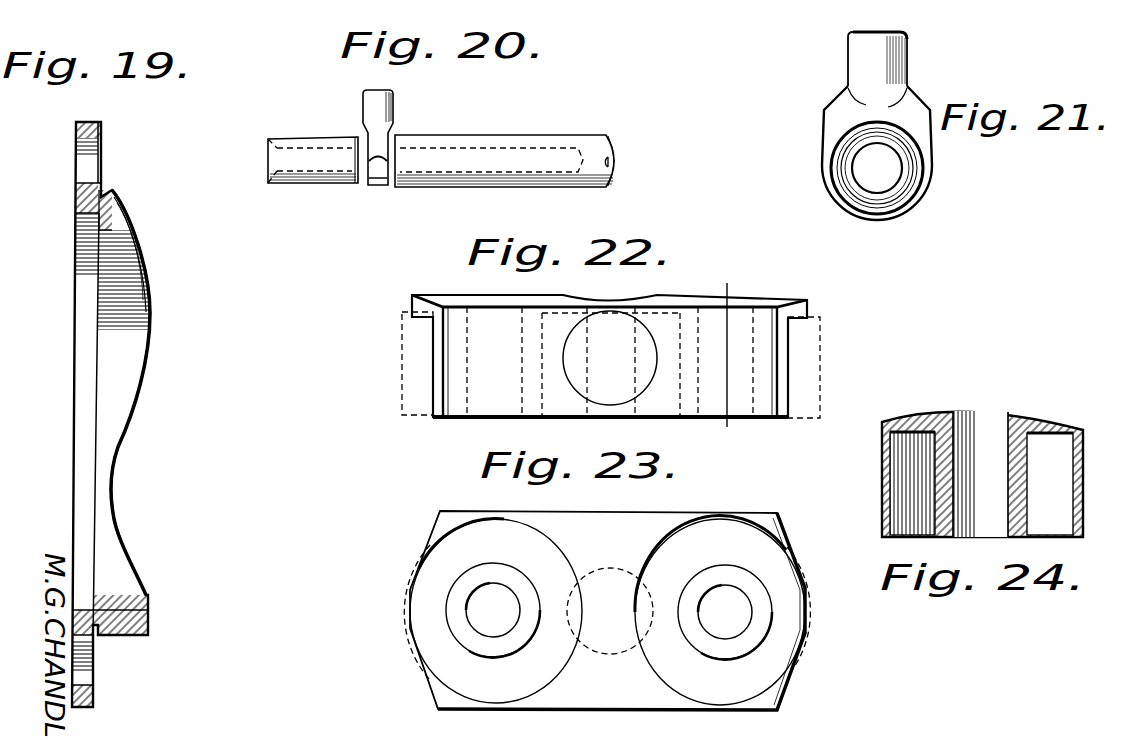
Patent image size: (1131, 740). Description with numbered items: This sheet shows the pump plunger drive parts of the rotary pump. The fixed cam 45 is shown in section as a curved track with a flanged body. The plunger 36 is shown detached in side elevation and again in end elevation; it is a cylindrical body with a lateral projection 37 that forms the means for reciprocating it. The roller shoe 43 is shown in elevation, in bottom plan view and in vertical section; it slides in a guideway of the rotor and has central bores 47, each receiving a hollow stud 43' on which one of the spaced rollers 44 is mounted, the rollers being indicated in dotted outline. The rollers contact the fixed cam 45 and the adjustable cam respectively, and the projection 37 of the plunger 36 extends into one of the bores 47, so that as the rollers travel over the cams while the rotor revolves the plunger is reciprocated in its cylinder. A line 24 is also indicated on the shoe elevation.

In FIG. 22, the line / shaft 24 is at (724, 357).
In FIG. 20, the pump plunger 36 is at (436, 157).
In FIG. 21, the pump plunger 36 is at (933, 188).
In FIG. 20, the lateral projection 37 is at (370, 105).
In FIG. 21, the lateral projection 37 is at (888, 53).
In FIG. 22, the shoe 43 is at (620, 341).
In FIG. 23, the shoe 43 is at (607, 610).
In FIG. 24, the shoe 43 is at (950, 474).
In FIG. 23, the hollow stud 43' is at (607, 610).
In FIG. 24, the hollow stud 43' is at (942, 483).
In FIG. 22, the roller 44 is at (845, 347).
In FIG. 23, the roller 44 is at (835, 632).
In FIG. 19, the fixed cam 45 is at (152, 302).
In FIG. 23, the central bore 47 is at (502, 600).
In FIG. 24, the central bore 47 is at (980, 420).